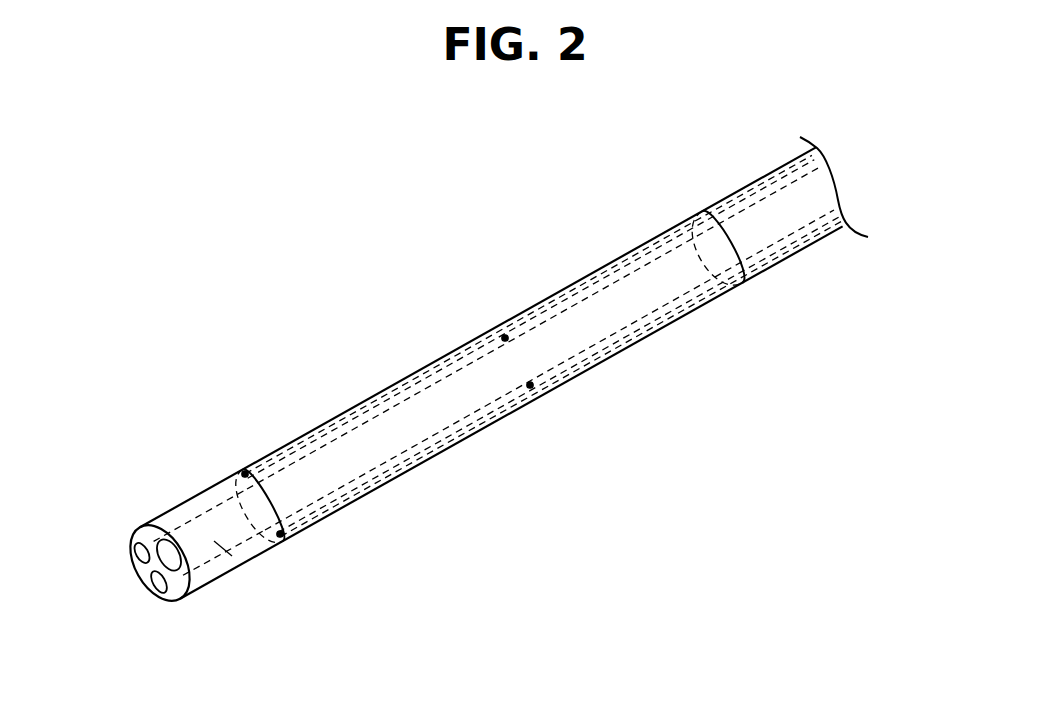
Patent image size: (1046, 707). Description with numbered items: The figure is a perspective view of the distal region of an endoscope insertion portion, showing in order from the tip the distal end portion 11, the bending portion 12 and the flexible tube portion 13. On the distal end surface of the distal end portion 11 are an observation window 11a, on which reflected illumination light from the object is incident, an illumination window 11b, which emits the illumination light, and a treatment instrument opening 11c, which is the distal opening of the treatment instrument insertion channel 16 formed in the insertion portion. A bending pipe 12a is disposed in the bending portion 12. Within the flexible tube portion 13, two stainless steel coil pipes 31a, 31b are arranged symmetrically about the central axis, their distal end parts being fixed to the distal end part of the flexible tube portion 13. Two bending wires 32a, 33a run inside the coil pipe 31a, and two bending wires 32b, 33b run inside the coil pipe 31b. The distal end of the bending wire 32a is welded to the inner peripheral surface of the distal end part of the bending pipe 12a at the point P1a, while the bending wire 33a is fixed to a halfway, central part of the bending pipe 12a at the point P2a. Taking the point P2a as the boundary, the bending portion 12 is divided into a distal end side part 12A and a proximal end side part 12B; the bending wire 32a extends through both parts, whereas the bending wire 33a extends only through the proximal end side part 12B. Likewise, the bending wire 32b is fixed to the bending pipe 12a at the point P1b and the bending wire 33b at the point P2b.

The distal end portion 11 is at (192, 418).
The observation window 11a is at (140, 553).
The illumination window 11b is at (156, 586).
The treatment instrument opening 11c is at (168, 568).
The bending portion 12 is at (634, 113).
The distal end side part 12A is at (443, 282).
The proximal end side part 12B is at (656, 153).
The bending pipe 12a is at (660, 333).
The flexible tube portion 13 is at (660, 168).
The treatment instrument insertion channel 16 is at (232, 556).
The coil pipe 31a is at (784, 263).
The coil pipe 31b is at (726, 196).
The bending wire 32a is at (418, 478).
The bending wire 32b is at (408, 385).
The bending wire 33a is at (585, 377).
The bending wire 33b is at (547, 298).
The point P1a is at (280, 534).
The point P1b is at (245, 474).
The point P2a is at (530, 385).
The point P2b is at (505, 338).